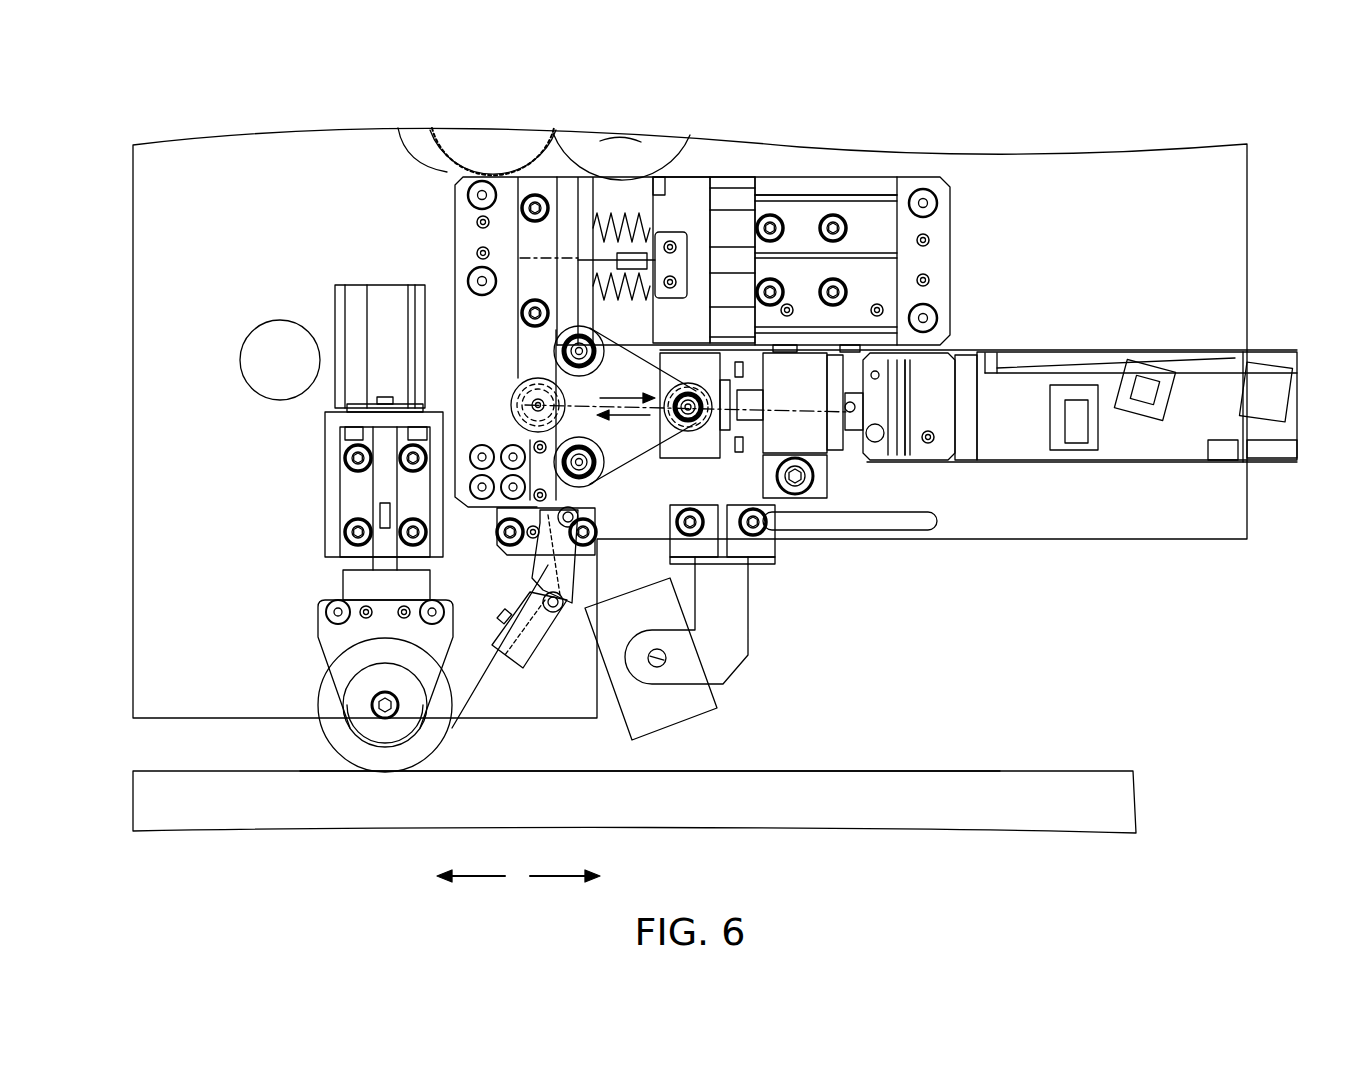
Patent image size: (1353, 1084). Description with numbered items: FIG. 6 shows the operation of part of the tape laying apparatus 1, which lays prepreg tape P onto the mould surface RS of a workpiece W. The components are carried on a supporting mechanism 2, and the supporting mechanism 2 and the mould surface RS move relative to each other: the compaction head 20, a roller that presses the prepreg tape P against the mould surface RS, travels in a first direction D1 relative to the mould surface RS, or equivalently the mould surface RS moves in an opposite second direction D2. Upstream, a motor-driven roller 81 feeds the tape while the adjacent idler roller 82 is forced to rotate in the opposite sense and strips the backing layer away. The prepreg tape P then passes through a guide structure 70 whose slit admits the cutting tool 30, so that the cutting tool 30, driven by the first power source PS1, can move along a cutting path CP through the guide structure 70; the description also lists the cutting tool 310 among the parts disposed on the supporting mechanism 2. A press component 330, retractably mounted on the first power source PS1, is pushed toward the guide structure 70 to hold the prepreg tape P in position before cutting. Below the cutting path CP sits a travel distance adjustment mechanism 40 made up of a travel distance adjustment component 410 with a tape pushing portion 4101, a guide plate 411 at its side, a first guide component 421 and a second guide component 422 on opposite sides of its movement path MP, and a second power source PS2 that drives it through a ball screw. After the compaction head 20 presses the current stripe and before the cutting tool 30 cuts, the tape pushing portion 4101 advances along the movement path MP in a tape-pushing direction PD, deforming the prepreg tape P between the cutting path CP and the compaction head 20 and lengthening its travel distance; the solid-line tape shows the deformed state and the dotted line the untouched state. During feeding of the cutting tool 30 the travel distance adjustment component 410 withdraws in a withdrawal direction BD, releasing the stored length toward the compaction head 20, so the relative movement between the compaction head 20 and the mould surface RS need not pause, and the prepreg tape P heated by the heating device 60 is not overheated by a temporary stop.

The tape laying apparatus 1 is at (296, 200).
The supporting mechanism 2 is at (1228, 236).
The compaction head 20 is at (330, 740).
The cutting tool 30 is at (975, 257).
The travel distance adjustment mechanism 40 is at (1020, 480).
The heating device 60 is at (687, 710).
The guide structure 70 is at (498, 237).
The motor-driven roller 81 is at (492, 148).
The idler roller 82 is at (662, 150).
The cutting tool 310 is at (603, 250).
The press component 330 is at (598, 180).
The travel distance adjustment component 410 is at (512, 398).
The guide plate 411 is at (723, 420).
The tape pushing portion 4101 is at (907, 448).
The first guide component 421 is at (550, 353).
The second guide component 422 is at (596, 472).
The cutting path CP is at (520, 258).
The movement path MP is at (528, 392).
The tape-pushing direction PD is at (643, 385).
The withdrawal direction BD is at (602, 420).
The first power source PS1 is at (828, 188).
The second power source PS2 is at (1025, 390).
The prepreg tape P is at (527, 447).
The mould surface RS is at (1012, 772).
The workpiece W is at (1160, 796).
The first direction D1 is at (565, 888).
The second direction D2 is at (471, 888).